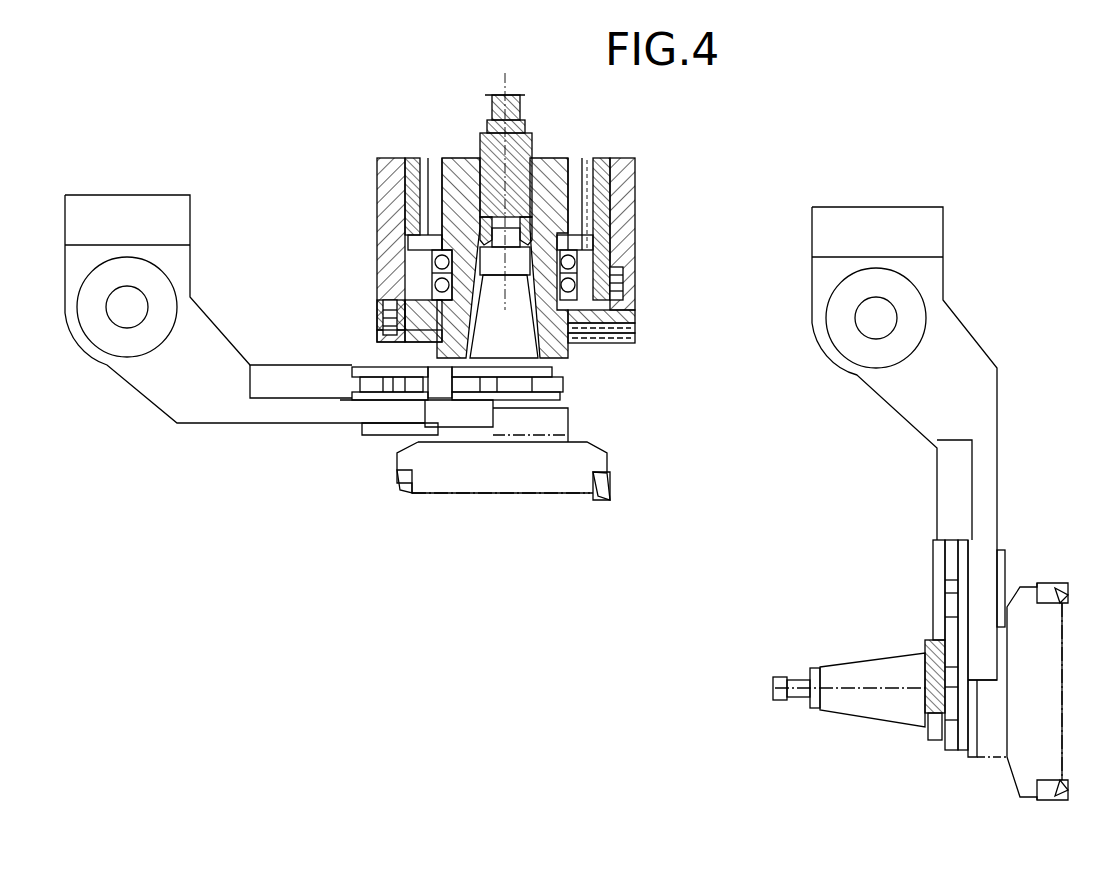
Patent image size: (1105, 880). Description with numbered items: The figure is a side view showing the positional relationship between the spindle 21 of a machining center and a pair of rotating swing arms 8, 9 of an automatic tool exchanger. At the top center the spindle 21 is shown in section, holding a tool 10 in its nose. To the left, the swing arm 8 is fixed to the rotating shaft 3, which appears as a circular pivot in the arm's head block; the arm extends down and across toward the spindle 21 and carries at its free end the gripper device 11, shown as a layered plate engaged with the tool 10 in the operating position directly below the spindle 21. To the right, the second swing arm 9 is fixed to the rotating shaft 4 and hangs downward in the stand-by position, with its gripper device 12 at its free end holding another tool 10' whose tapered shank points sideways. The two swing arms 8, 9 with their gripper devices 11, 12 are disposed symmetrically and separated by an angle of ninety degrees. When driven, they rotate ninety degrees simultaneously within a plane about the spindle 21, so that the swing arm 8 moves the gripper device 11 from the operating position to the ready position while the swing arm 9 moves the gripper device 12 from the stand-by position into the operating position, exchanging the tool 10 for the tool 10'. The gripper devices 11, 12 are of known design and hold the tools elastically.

The rotating shaft 3 is at (135, 302).
The rotating shaft 4 is at (885, 313).
The swing arm 8 is at (230, 413).
The swing arm 9 is at (925, 423).
The tool 10 is at (503, 478).
The tool 10' is at (849, 654).
The gripper device 11 is at (562, 387).
The gripper device 12 is at (935, 627).
The spindle 21 is at (573, 353).